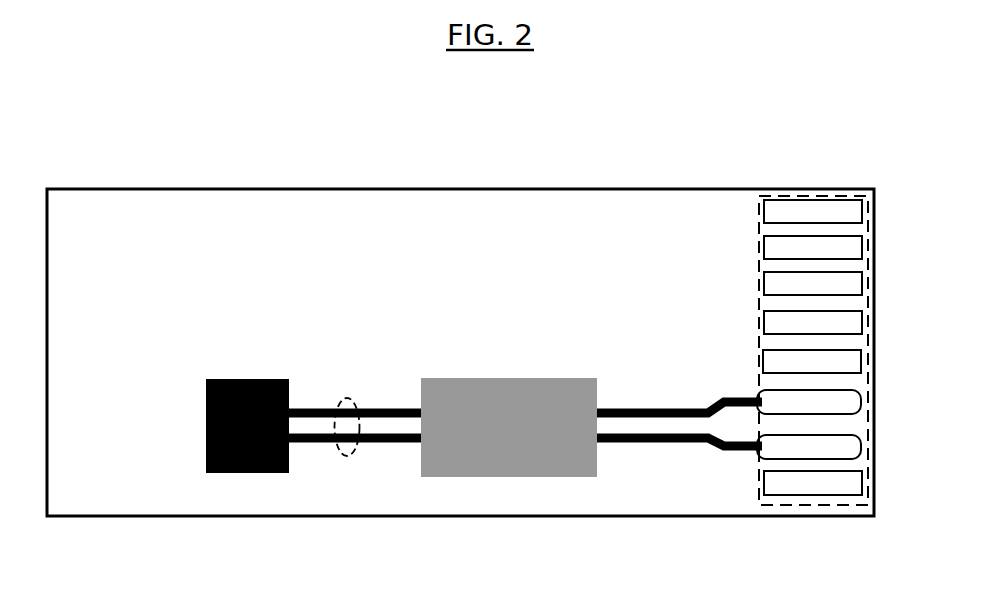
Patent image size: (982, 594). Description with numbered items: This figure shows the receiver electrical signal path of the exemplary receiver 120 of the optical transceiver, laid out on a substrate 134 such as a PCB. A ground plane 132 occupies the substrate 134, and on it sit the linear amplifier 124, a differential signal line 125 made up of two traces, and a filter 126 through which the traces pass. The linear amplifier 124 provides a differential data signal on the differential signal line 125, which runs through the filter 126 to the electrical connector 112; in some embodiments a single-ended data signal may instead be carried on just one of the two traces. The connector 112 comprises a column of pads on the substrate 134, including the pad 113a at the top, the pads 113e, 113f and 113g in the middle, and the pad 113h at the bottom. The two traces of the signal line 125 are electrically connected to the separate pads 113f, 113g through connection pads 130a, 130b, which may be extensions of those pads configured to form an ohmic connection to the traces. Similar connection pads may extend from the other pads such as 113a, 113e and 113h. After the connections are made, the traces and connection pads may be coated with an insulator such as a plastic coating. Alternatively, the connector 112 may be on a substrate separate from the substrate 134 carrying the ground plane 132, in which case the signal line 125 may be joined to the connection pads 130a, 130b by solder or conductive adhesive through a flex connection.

The receiver 120 is at (409, 138).
The electrical connector 112 is at (778, 192).
The pad 113a is at (825, 205).
The pad 113e is at (812, 361).
The pad 113f is at (809, 402).
The pad 113g is at (809, 447).
The pad 113h is at (822, 490).
The linear amplifier 124 is at (206, 419).
The differential signal line 125 is at (343, 395).
The filter 126 is at (468, 392).
The connection pad 130a is at (757, 396).
The connection pad 130b is at (757, 452).
The ground plane 132 is at (257, 274).
The substrate 134 is at (382, 518).